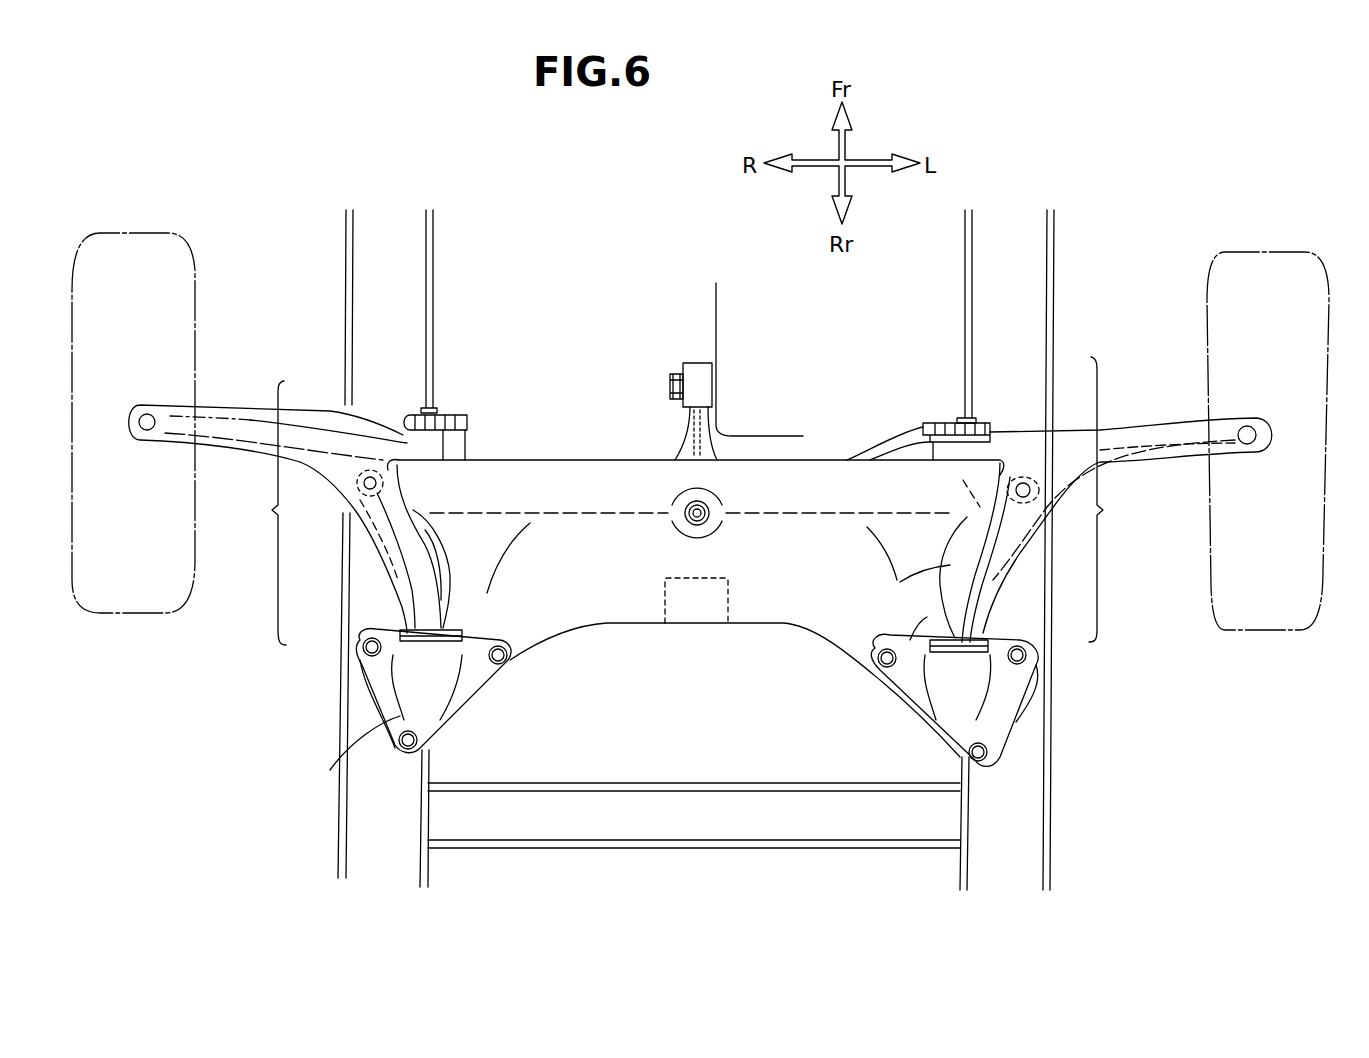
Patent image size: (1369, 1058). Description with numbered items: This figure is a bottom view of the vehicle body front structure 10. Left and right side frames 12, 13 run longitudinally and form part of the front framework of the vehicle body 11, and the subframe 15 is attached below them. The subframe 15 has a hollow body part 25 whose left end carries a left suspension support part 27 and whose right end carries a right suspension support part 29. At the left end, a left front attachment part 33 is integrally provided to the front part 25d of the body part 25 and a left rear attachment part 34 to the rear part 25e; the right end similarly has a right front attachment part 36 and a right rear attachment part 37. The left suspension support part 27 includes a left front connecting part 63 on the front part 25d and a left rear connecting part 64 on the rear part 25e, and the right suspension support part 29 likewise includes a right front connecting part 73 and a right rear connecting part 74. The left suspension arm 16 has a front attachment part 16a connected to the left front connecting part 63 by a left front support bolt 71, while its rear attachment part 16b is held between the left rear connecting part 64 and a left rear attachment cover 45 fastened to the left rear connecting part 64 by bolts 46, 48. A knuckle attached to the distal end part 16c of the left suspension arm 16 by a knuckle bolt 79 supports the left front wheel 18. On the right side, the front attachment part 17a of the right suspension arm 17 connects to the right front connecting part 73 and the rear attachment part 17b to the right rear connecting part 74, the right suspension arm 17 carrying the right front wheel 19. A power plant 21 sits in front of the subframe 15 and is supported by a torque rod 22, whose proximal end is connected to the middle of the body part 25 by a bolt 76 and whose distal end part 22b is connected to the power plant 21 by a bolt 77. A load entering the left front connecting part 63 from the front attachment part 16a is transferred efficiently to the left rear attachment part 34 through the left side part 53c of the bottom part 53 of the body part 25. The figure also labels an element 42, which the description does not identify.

The vehicle body front structure 10 is at (445, 150).
The vehicle body 11 is at (1050, 290).
The left side frame 12 is at (1048, 233).
The right side frame 13 is at (354, 240).
The subframe 15 is at (586, 456).
The left suspension arm 16 is at (1160, 426).
The front attachment part 16a is at (962, 424).
The rear attachment part 16b is at (950, 662).
The distal end part 16c is at (1232, 456).
The right suspension arm 17 is at (241, 404).
The front attachment part 17a is at (443, 436).
The rear attachment part 17b is at (455, 646).
The left front wheel 18 is at (1222, 258).
The right front wheel 19 is at (185, 240).
The power plant 21 is at (716, 308).
The torque rod 22 is at (680, 442).
The distal end part 22b is at (706, 402).
The body part 25 is at (813, 472).
The front part 25d is at (950, 480).
The rear part 25e is at (908, 682).
The left suspension support part 27 is at (1116, 499).
The right suspension support part 29 is at (260, 513).
The left front attachment part 33 is at (1027, 503).
The left rear attachment part 34 is at (1024, 690).
The right front attachment part 36 is at (370, 498).
The right rear attachment part 37 is at (366, 675).
The front support member 42 is at (1068, 440).
The left rear attachment cover 45 is at (396, 741).
The bolt 46 is at (1026, 660).
The bolt 48 is at (883, 668).
The bottom part 53 is at (657, 598).
The left side part 53c is at (905, 582).
The left front connecting part 63 is at (1005, 430).
The left rear connecting part 64 is at (1005, 642).
The left front support bolt 71 is at (960, 424).
The right front connecting part 73 is at (405, 420).
The right rear connecting part 74 is at (395, 626).
The bolt 76 is at (690, 522).
The bolt 77 is at (672, 392).
The knuckle bolt 79 is at (1250, 430).